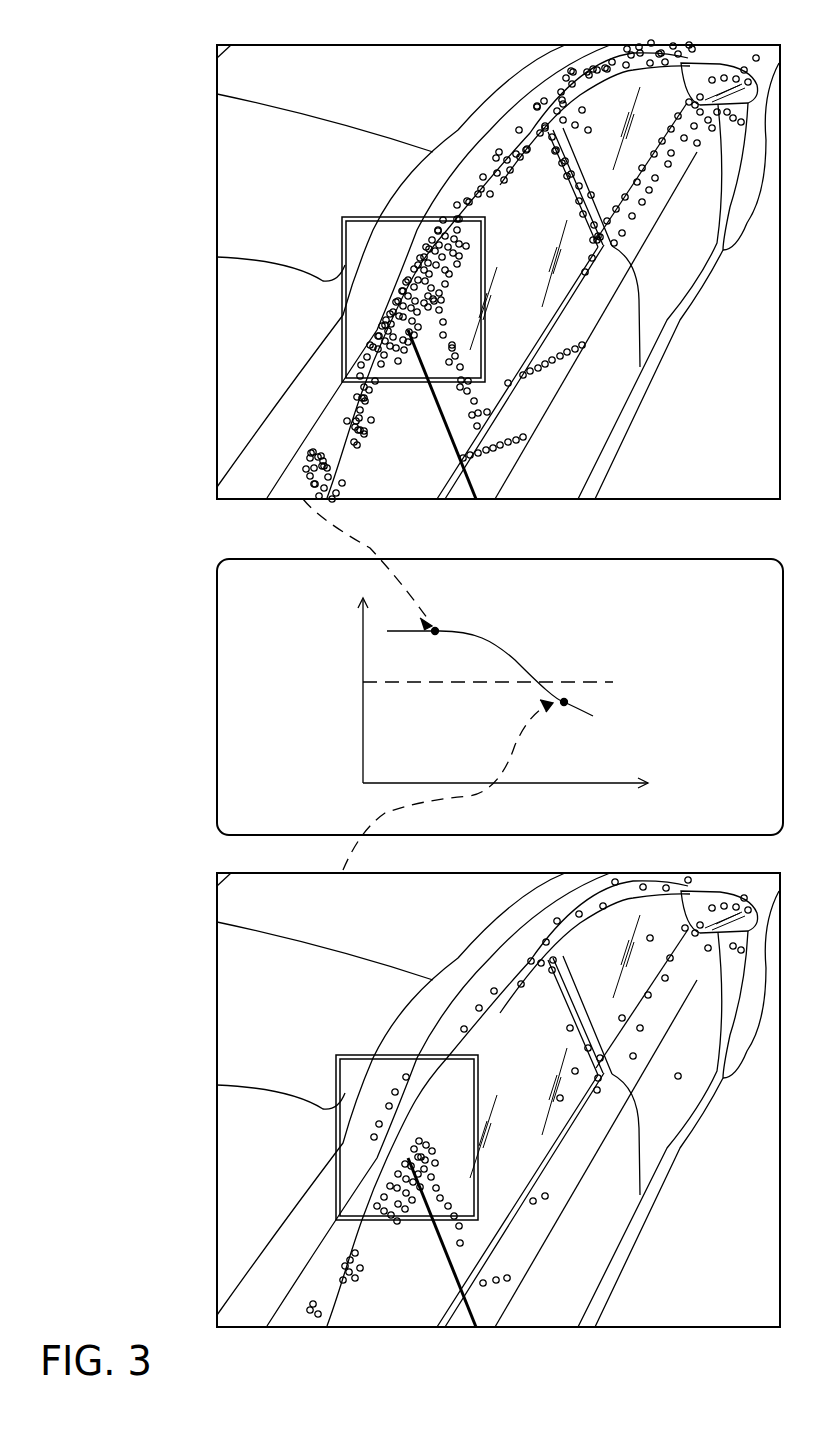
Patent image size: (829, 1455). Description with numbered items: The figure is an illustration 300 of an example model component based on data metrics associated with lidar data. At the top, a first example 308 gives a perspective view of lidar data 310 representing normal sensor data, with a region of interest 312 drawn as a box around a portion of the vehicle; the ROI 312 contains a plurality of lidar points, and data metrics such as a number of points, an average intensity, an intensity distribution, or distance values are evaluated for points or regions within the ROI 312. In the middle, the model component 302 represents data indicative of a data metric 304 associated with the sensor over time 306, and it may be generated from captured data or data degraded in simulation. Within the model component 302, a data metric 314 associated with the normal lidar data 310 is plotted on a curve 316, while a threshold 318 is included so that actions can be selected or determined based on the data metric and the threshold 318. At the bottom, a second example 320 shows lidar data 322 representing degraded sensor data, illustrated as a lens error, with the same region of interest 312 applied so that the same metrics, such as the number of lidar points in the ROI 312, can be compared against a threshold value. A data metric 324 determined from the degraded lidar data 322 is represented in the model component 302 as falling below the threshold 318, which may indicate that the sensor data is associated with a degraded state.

The illustration 300 is at (124, 22).
The model component 302 is at (598, 588).
The data metric 304 is at (363, 668).
The time 306 is at (553, 783).
The first example 308 is at (217, 167).
The lidar data 310 is at (388, 277).
The region of interest 312 is at (343, 295).
The data metric 314 is at (438, 648).
The curve 316 is at (515, 647).
The threshold 318 is at (633, 667).
The second example 320 is at (217, 900).
The lidar data 322 is at (398, 1149).
The data metric 324 is at (568, 717).